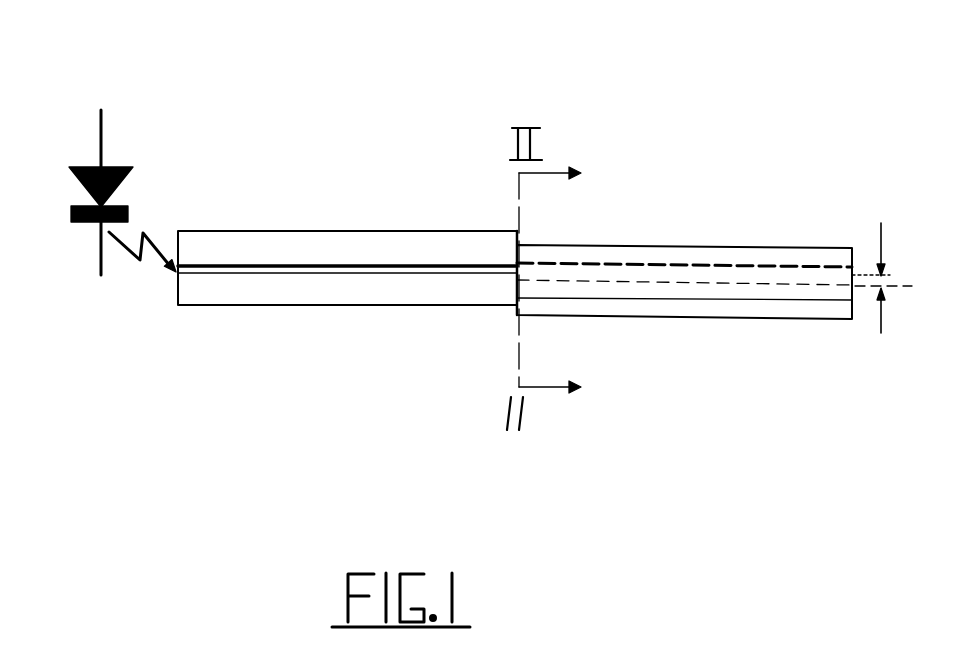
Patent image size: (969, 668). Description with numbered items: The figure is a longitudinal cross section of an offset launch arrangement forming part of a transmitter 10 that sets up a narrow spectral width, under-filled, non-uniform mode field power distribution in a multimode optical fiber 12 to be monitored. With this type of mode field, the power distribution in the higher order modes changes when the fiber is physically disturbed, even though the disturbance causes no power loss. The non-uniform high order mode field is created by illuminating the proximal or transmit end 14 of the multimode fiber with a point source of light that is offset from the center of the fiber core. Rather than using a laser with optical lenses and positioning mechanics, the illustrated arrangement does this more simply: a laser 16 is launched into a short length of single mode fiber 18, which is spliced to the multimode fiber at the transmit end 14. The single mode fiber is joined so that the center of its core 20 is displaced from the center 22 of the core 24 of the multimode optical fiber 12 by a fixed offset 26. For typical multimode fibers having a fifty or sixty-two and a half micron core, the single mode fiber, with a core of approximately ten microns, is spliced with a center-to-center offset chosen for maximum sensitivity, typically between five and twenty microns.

The transmitter 10 is at (142, 343).
The multimode optical fiber 12 is at (680, 245).
The transmit end 14 is at (517, 300).
The laser 16 is at (105, 135).
The single mode fiber 18 is at (342, 220).
The core 20 is at (340, 268).
The center 22 is at (712, 290).
The core 24 is at (780, 300).
The fixed offset 26 is at (886, 268).